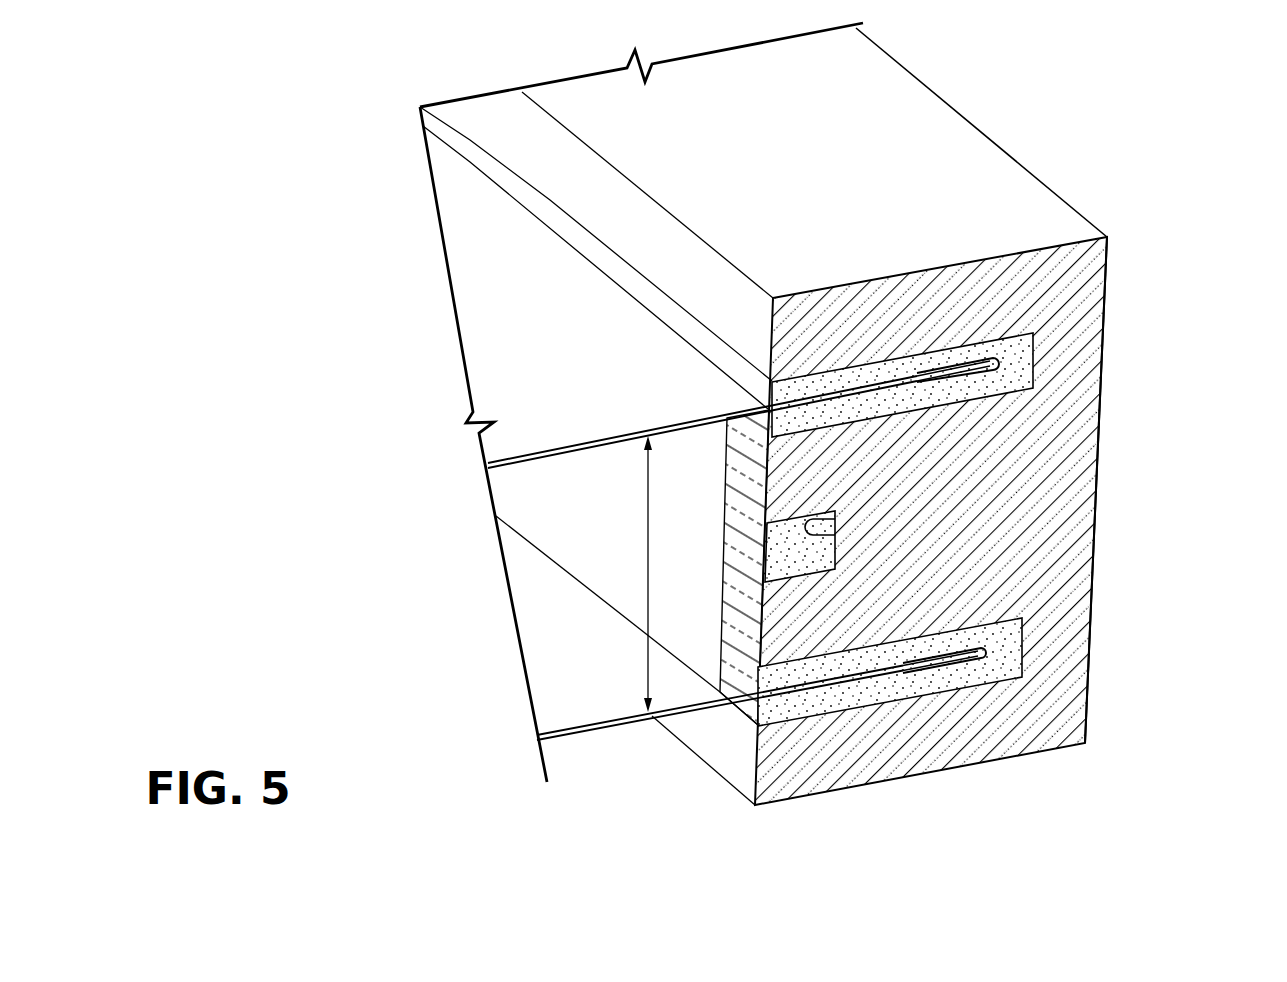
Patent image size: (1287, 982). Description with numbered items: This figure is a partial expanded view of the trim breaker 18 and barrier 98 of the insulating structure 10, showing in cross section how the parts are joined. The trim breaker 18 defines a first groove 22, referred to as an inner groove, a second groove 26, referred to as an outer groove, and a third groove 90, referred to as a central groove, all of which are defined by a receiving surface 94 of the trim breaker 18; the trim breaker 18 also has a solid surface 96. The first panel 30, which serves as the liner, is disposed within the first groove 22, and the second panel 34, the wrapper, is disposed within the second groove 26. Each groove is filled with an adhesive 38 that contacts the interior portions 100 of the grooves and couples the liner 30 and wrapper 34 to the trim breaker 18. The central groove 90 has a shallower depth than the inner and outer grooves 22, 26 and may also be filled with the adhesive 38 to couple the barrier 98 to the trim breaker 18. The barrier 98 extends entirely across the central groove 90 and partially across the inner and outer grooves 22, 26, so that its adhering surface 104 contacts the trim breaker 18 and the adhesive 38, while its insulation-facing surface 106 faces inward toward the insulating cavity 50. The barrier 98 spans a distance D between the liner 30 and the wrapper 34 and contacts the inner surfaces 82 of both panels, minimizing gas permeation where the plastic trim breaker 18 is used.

The insulating structure 10 is at (326, 136).
The trim breaker 18 is at (917, 187).
The first groove 22 is at (1033, 363).
The second groove 26 is at (1022, 653).
The first panel 30 is at (500, 306).
The second panel 34 is at (573, 737).
The adhesive 38 is at (957, 353).
The insulating cavity 50 is at (588, 664).
The inner surfaces 82 is at (608, 441).
The third groove 90 is at (837, 520).
The receiving surface 94 is at (743, 768).
The solid surface 96 is at (1090, 708).
The barrier 98 is at (610, 513).
The interior portions 100 is at (920, 405).
The adhering surface 104 is at (772, 623).
The insulation-facing surface 106 is at (667, 556).
The distance D is at (648, 604).